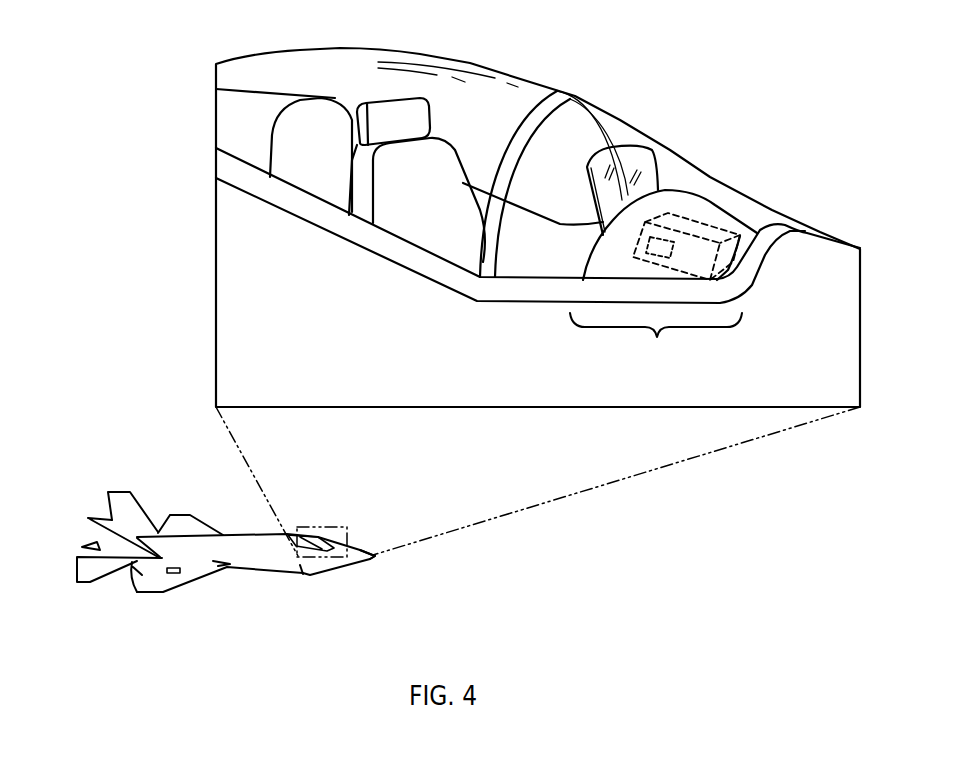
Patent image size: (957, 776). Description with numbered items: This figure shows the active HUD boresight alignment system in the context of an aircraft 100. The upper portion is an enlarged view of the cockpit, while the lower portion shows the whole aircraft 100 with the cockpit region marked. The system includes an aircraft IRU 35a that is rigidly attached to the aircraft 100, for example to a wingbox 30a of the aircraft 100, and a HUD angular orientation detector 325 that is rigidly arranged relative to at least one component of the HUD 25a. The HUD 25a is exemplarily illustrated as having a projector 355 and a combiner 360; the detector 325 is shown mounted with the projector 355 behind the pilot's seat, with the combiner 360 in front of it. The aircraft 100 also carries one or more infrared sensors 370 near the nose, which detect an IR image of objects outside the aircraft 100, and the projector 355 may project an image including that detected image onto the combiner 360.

The combiner 360 is at (648, 160).
The projector 355 is at (692, 222).
The HUD angular orientation detector 325 is at (645, 245).
The HUD 25a is at (330, 543).
The aircraft 100 is at (160, 496).
The wingbox 30a is at (142, 578).
The aircraft IRU 35a is at (180, 572).
The infrared (IR) sensor 370 is at (372, 563).